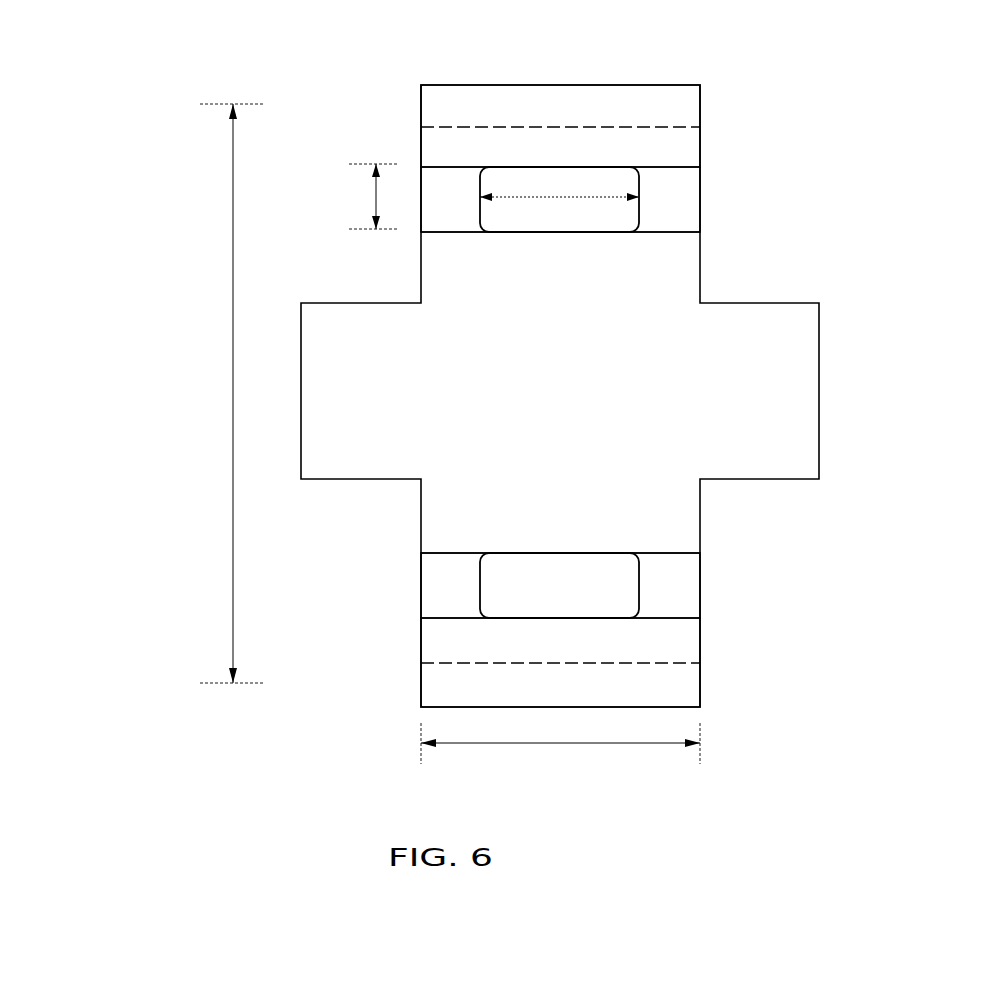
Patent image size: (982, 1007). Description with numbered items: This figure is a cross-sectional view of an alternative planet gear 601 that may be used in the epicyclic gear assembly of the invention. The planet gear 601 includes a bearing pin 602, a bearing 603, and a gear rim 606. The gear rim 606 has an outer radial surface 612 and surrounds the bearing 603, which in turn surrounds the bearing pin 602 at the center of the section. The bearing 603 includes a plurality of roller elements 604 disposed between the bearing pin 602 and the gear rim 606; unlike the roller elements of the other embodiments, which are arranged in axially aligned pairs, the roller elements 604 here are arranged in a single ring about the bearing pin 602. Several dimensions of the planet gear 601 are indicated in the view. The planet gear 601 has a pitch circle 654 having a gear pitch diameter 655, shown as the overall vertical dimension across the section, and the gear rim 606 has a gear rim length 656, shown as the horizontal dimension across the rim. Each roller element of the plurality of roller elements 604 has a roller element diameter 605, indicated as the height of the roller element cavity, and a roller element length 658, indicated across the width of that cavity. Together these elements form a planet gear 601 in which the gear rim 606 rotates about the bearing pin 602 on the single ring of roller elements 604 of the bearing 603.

The planet gear 601 is at (136, 39).
The bearing pin 602 is at (331, 368).
The bearing 603 is at (720, 167).
The roller elements 604 is at (580, 178).
The roller element diameter 605 is at (376, 197).
The gear rim 606 is at (467, 106).
The outer radial surface 612 is at (611, 85).
The pitch circle 654 is at (182, 393).
The gear pitch diameter 655 is at (233, 513).
The gear rim length 656 is at (553, 746).
The roller element length 658 is at (555, 197).